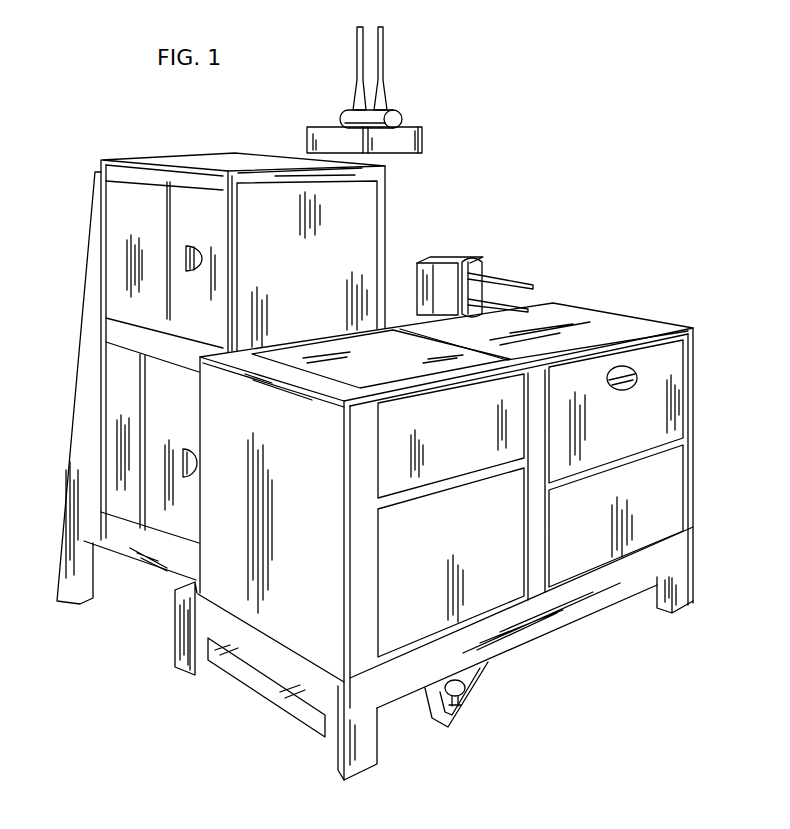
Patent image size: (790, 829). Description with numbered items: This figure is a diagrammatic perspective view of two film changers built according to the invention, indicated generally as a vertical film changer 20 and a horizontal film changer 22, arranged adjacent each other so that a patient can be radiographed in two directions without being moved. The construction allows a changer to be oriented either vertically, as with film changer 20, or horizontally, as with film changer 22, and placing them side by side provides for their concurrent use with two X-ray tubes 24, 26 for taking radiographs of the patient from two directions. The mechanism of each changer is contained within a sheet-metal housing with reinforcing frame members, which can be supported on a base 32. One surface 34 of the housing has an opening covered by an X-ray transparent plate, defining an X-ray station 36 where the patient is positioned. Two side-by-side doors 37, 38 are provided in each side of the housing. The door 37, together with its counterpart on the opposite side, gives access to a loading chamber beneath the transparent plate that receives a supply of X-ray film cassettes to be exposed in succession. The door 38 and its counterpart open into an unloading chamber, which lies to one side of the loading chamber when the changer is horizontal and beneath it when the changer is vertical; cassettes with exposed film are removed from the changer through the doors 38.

The film changer 20 is at (85, 160).
The film changer 22 is at (578, 635).
The X-ray tube 24 is at (398, 117).
The X-ray tube 26 is at (482, 262).
The base 32 is at (693, 586).
The surface of the housing 34 is at (628, 325).
The X-ray station 36 is at (245, 305).
The door 37 is at (175, 212).
The door 38 is at (160, 404).